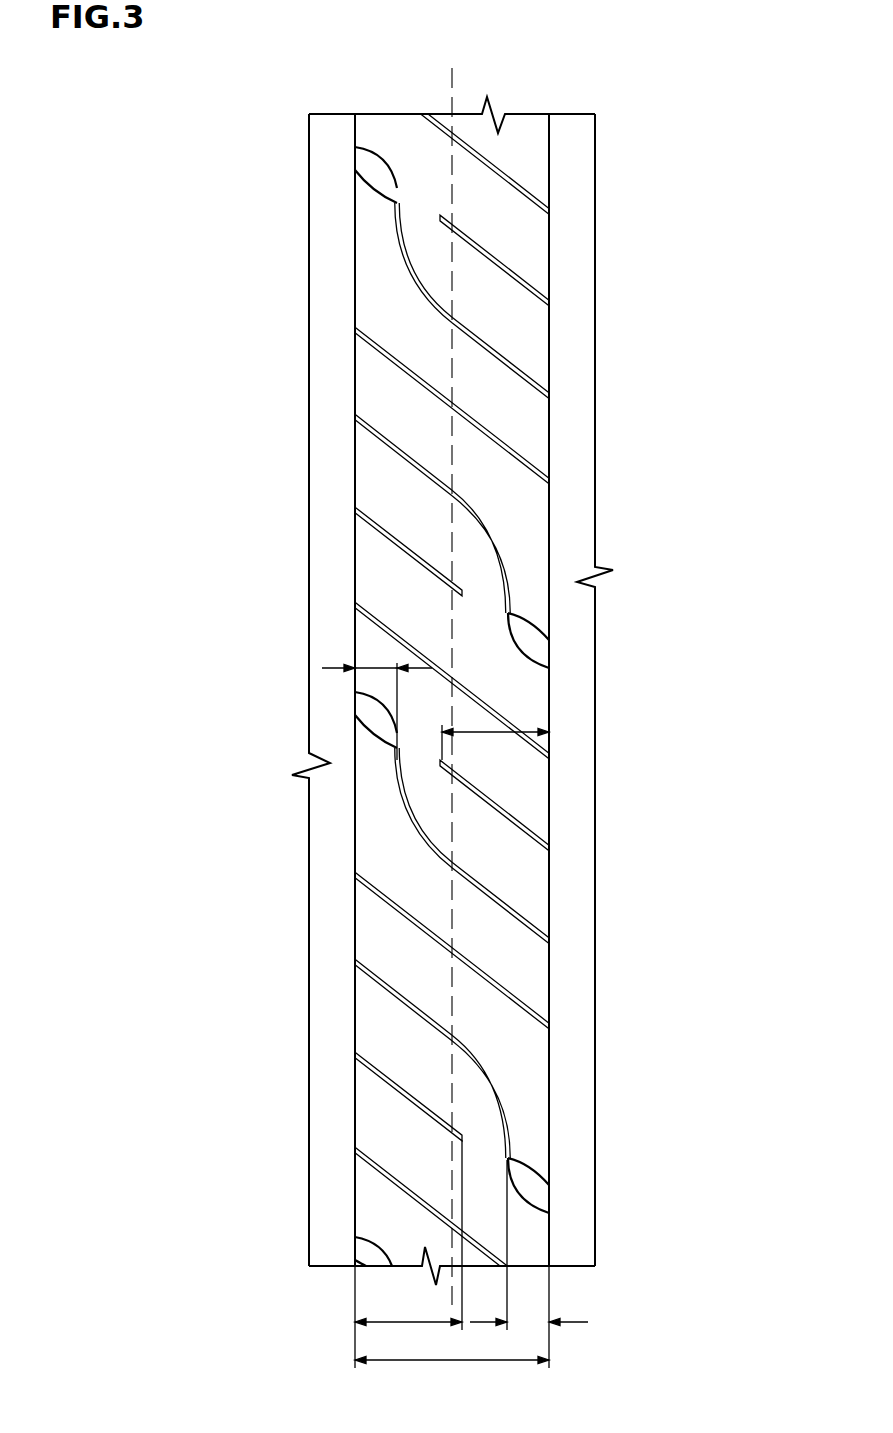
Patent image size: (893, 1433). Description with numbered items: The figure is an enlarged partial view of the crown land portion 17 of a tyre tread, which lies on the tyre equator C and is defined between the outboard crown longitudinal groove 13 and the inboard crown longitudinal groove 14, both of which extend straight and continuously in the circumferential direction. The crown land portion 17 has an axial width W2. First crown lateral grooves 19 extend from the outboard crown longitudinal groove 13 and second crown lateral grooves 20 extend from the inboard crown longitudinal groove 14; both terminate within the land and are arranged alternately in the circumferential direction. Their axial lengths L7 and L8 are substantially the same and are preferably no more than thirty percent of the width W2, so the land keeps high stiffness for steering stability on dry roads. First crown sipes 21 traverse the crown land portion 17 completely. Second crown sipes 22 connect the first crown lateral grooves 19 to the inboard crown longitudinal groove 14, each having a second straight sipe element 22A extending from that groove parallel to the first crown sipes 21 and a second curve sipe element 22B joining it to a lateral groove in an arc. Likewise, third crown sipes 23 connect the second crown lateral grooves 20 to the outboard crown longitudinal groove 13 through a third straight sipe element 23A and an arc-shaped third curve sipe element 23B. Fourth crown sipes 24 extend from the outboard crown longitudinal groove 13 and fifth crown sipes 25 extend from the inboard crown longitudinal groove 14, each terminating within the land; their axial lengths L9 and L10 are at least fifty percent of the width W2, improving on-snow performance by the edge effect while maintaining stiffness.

The outboard crown longitudinal groove 13 is at (319, 150).
The inboard crown longitudinal groove 14 is at (575, 158).
The crown land portion 17 is at (523, 147).
The first crown lateral grooves 19 is at (377, 168).
The second crown lateral grooves 20 is at (532, 639).
The first crown sipes 21 is at (397, 360).
The second crown sipes 22 is at (574, 573).
The second straight sipe element 22A is at (512, 367).
The second curve sipe element 22B is at (420, 277).
The third crown sipes 23 is at (485, 741).
The third straight sipe element 23A is at (417, 1012).
The third curve sipe element 23B is at (503, 1122).
The fourth crown sipes 24 is at (382, 530).
The fifth crown sipes 25 is at (483, 249).
The tyre equator C is at (452, 672).
The axial width of the crown land portion W2 is at (452, 1317).
The axial lengths of the first crown lateral grooves L7 is at (378, 662).
The axial lengths of the second crown lateral grooves L8 is at (529, 1245).
The axial lengths of the fourth crown sipes L9 is at (408, 1235).
The axial lengths of the fifth crown sipes L10 is at (492, 730).